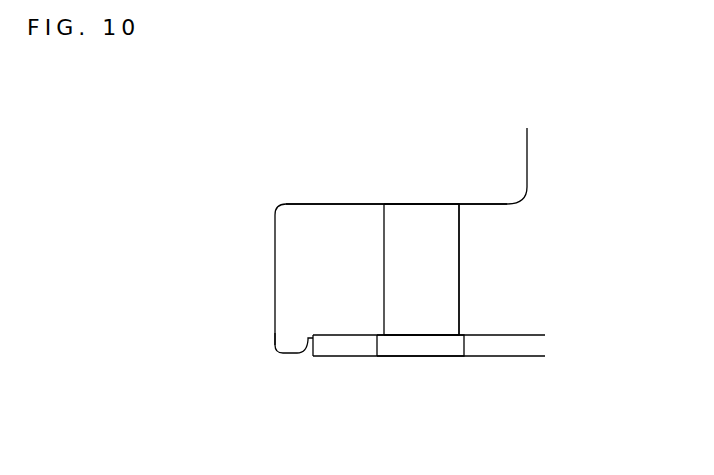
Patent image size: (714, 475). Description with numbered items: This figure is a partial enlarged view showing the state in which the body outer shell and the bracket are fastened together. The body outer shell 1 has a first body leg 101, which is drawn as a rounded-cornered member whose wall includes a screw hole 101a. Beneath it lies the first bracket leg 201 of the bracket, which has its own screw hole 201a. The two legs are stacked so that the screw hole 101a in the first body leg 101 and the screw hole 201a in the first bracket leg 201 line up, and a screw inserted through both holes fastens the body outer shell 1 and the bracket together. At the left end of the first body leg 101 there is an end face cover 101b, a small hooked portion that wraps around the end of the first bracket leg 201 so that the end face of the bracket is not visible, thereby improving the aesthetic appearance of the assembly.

The body outer shell 1 is at (550, 157).
The first body leg 101 is at (337, 204).
The screw hole 101a is at (423, 204).
The end face cover 101b is at (287, 348).
The first bracket leg 201 is at (345, 357).
The screw hole 201a is at (433, 357).